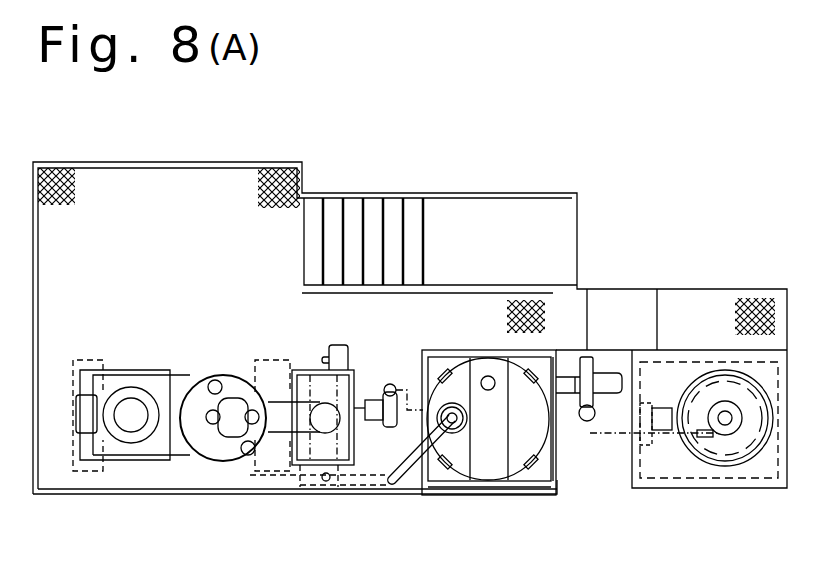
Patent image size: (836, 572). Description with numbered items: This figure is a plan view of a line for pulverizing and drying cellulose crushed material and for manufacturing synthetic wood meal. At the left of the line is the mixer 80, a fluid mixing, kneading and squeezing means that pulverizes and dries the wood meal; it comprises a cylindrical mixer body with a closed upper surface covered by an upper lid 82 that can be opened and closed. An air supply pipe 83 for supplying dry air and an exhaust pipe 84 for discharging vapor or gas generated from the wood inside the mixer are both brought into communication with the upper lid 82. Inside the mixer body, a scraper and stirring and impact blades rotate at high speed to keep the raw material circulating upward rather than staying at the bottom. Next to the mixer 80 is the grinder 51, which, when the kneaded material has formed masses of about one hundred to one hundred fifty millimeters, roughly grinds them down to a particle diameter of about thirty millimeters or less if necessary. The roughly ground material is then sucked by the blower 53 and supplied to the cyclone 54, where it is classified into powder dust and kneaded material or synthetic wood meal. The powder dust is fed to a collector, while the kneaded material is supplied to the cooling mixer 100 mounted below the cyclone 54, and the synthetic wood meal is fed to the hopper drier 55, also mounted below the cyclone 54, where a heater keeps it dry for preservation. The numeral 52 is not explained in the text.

The mixer 80 is at (196, 456).
The upper lid 82 is at (233, 393).
The air supply pipe 83 is at (257, 405).
The exhaust pipe 84 is at (205, 405).
The grinder 51 is at (348, 447).
The crank arm 52 is at (443, 365).
The blower 53 is at (605, 393).
The cyclone 54 is at (723, 417).
The hopper drier 55 is at (750, 462).
The cooling mixer 100 is at (495, 463).